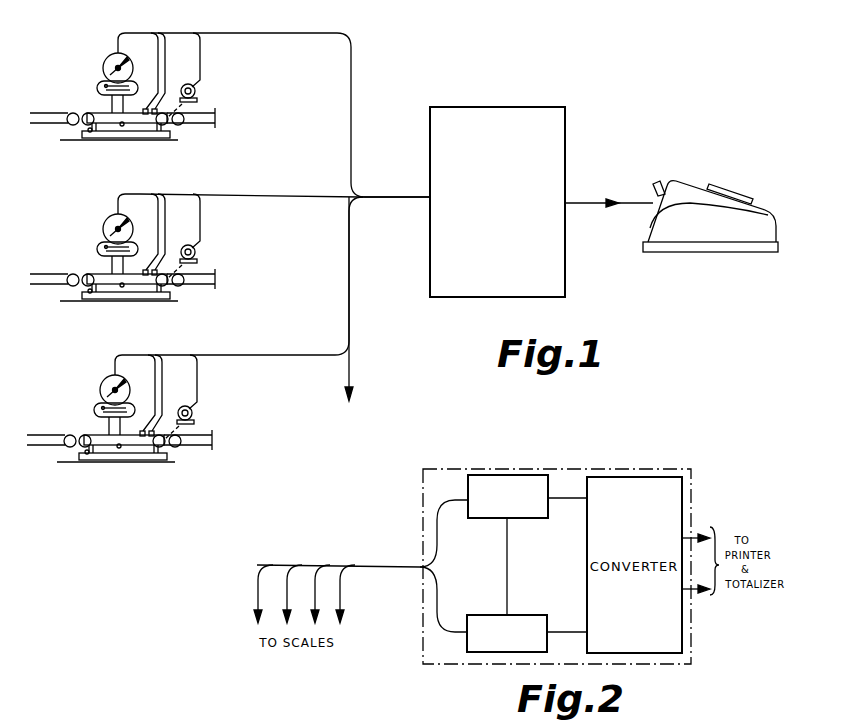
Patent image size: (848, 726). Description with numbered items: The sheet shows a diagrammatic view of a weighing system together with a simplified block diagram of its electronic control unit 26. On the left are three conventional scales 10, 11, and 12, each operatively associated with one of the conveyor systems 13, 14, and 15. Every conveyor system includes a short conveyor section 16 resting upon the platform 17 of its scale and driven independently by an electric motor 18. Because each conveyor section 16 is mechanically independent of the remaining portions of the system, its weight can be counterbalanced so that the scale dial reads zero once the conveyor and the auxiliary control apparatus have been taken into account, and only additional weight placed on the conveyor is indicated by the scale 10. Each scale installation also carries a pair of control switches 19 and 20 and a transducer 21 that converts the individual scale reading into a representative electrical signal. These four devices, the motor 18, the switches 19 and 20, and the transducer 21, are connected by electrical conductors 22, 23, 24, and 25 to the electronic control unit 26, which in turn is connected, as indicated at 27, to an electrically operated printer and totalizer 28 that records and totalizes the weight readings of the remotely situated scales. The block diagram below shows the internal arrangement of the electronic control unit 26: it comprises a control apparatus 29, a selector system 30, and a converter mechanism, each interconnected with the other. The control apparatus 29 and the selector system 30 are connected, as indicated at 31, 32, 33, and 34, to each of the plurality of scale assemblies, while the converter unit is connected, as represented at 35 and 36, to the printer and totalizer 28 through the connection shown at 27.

In FIG. 1, the scale 10 is at (110, 53).
In FIG. 1, the scale 11 is at (107, 235).
In FIG. 1, the scale 12 is at (104, 397).
In FIG. 1, the conveyor system 13 is at (68, 112).
In FIG. 1, the conveyor system 14 is at (54, 268).
In FIG. 1, the conveyor system 15 is at (51, 430).
In FIG. 1, the conveyor section 16 is at (121, 127).
In FIG. 1, the platform 17 is at (97, 134).
In FIG. 1, the electric motor 18 is at (198, 96).
In FIG. 1, the control switch 19 is at (146, 114).
In FIG. 1, the control switch 20 is at (158, 114).
In FIG. 1, the transducer 21 is at (105, 68).
In FIG. 1, the electrical conductor 22 is at (203, 47).
In FIG. 1, the electrical conductor 23 is at (166, 62).
In FIG. 1, the electrical conductor 24 is at (166, 45).
In FIG. 1, the electrical conductor 25 is at (133, 30).
In FIG. 1, the electronic control unit 26 is at (509, 104).
In FIG. 2, the electronic control unit 26 is at (603, 464).
In FIG. 1, the connection 27 is at (572, 202).
In FIG. 1, the printer and totalizer 28 is at (641, 235).
In FIG. 2, the control apparatus 29 is at (548, 472).
In FIG. 2, the selector system 30 is at (513, 614).
In FIG. 2, the connection 31 is at (257, 588).
In FIG. 2, the connection 32 is at (287, 604).
In FIG. 2, the connection 33 is at (315, 606).
In FIG. 2, the connection 34 is at (340, 586).
In FIG. 2, the connection 35 is at (694, 537).
In FIG. 2, the connection 36 is at (693, 596).